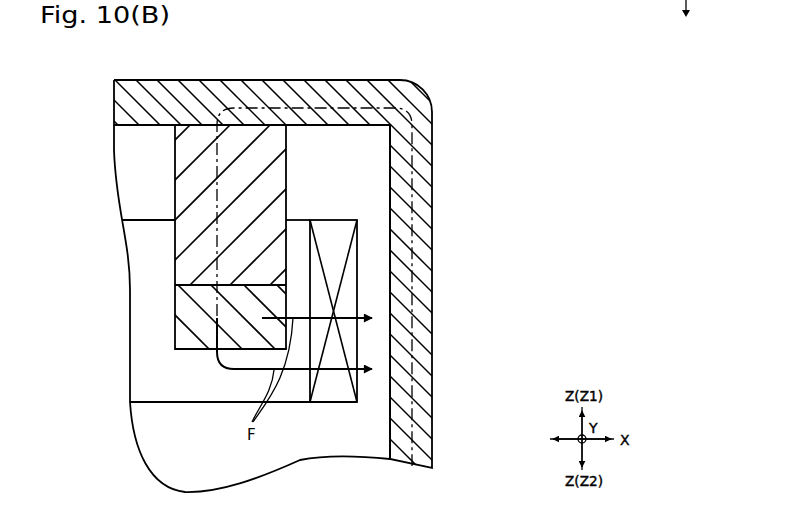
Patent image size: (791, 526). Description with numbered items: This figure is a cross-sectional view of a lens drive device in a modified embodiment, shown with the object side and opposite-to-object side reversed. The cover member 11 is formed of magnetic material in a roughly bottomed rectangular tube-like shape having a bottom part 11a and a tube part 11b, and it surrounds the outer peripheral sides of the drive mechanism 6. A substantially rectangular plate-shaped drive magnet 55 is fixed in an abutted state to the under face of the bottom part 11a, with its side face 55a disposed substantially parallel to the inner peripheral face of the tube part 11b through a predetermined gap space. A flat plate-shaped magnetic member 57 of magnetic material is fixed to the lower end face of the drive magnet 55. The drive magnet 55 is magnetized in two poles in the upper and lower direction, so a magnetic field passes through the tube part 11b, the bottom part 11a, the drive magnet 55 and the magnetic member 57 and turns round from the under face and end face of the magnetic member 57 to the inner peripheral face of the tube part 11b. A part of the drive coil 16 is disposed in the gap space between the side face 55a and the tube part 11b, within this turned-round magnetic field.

The cover member 11 is at (270, 263).
The bottom part 11a is at (272, 79).
The tube part 11b is at (432, 157).
The drive mechanism 6 is at (372, 200).
The drive magnet 55 is at (263, 244).
The side face 55a is at (287, 172).
The magnetic member 57 is at (175, 312).
The drive coil 16 is at (357, 283).